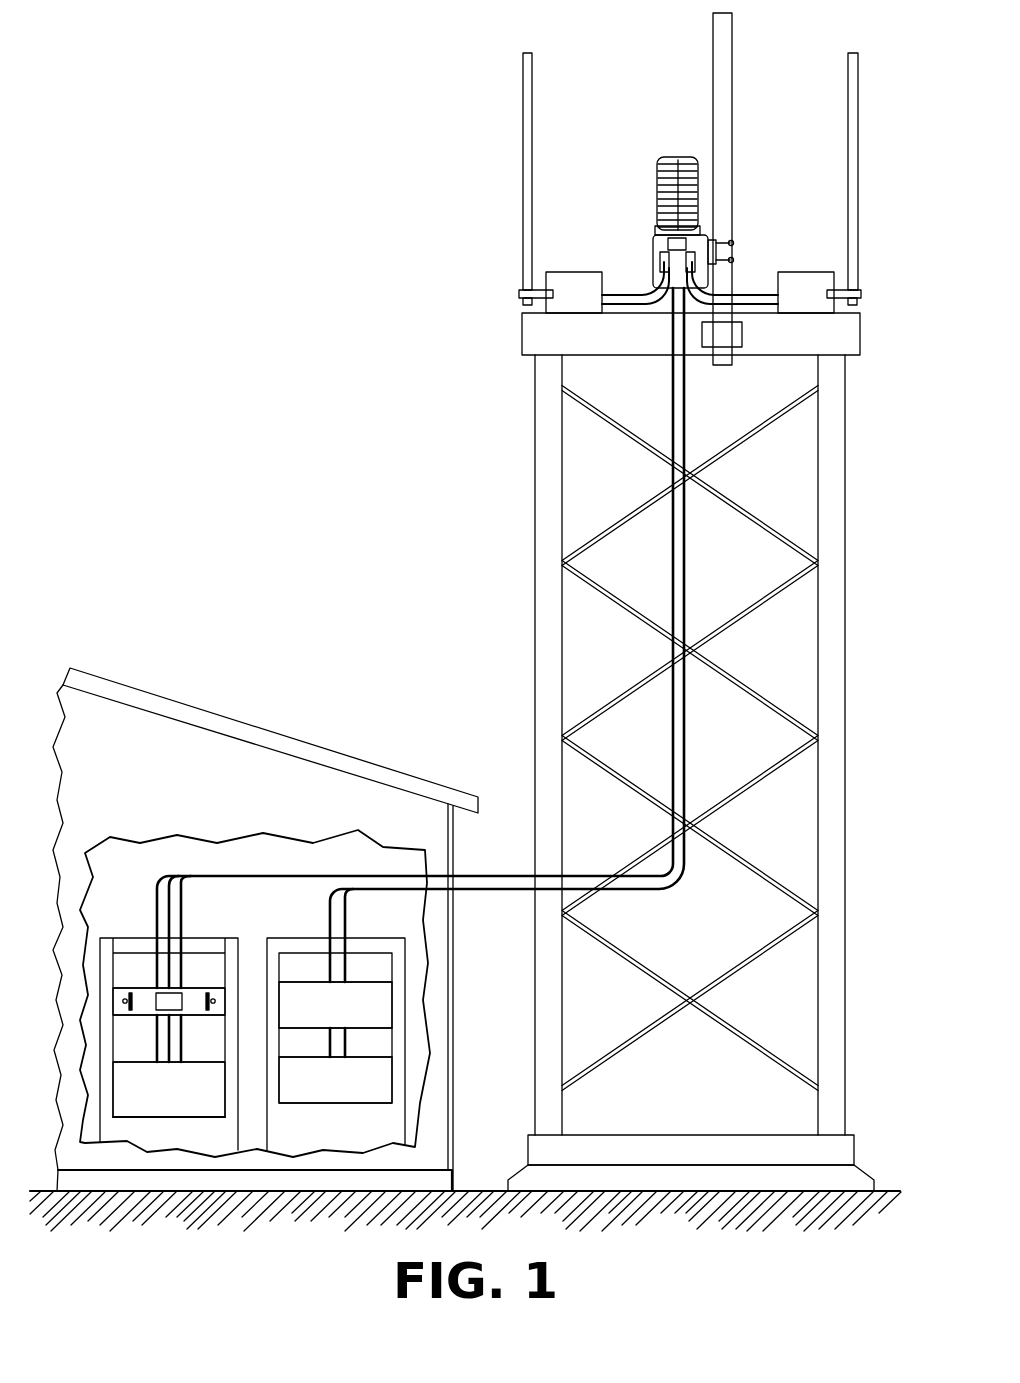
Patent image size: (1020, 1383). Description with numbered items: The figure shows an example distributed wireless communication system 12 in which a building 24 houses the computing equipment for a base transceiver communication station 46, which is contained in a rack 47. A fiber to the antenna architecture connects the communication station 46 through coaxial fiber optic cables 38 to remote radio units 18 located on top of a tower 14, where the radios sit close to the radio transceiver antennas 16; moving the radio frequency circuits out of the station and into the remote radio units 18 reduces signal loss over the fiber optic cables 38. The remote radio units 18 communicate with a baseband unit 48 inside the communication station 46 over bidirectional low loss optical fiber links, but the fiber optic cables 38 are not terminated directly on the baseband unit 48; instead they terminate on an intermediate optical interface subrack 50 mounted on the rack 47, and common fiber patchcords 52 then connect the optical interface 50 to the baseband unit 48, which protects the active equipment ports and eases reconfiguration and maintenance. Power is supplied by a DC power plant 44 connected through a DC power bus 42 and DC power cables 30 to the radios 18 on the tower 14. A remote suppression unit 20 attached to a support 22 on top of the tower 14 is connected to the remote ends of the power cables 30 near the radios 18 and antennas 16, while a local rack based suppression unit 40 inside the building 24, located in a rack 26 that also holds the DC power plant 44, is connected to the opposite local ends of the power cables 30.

The distributed wireless communication system 12 is at (232, 143).
The tower 14 is at (522, 338).
The radio transceiver antennas 16 is at (523, 130).
The remote radio units 18 is at (583, 272).
The remote suppression unit 20 is at (657, 181).
The support 22 is at (713, 85).
The building 24 is at (276, 733).
The rack 26 is at (245, 950).
The DC power cables 30 is at (226, 875).
The coaxial fiber optic cables 38 is at (347, 915).
The local rack based suppression unit 40 is at (143, 987).
The DC power bus 42 is at (183, 1037).
The DC power plant 44 is at (184, 1101).
The base transceiver communication station 46 is at (405, 1118).
The rack 47 is at (393, 968).
The baseband unit 48 is at (385, 1078).
The optical interface subrack 50 is at (385, 1007).
The fiber patchcords 52 is at (345, 1043).